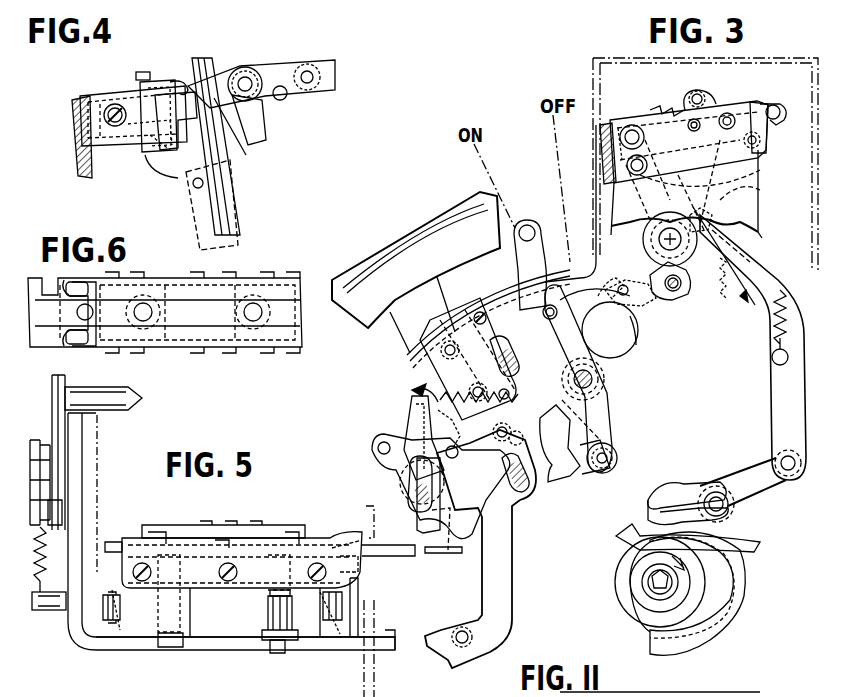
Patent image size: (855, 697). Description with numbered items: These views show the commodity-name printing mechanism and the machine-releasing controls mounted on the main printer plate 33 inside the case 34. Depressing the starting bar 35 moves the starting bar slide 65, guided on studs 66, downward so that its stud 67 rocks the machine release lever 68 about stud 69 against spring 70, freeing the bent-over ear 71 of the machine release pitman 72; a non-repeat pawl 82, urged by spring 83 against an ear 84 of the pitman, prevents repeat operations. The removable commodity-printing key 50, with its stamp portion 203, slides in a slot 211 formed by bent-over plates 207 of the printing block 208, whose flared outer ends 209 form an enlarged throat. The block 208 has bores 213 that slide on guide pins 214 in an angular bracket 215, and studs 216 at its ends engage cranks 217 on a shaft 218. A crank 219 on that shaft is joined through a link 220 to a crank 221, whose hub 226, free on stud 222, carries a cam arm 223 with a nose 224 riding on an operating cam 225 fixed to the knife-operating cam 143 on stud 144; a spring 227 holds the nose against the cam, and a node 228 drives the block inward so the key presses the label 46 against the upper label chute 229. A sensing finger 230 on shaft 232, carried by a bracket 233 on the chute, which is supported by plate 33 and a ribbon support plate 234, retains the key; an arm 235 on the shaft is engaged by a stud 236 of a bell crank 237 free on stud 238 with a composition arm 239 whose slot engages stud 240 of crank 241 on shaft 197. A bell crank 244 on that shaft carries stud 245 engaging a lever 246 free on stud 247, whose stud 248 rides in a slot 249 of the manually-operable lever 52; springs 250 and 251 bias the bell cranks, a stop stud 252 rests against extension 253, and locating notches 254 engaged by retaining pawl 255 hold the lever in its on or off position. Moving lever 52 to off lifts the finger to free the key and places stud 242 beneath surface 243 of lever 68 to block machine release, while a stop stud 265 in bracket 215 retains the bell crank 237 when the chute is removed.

In FIG. 5, the main printer plate 33 is at (92, 452).
In FIG. 3, the main printer plate 33 is at (760, 212).
In FIG. 3, the case or cabinet 34 is at (614, 58).
In FIG. 3, the starting bar 35 is at (384, 250).
In FIG. 4, the label 46 is at (200, 54).
In FIG. 11, the label 46 is at (738, 696).
In FIG. 4, the commodity-printing key 50 is at (150, 130).
In FIG. 5, the commodity-printing key 50 is at (398, 558).
In FIG. 3, the manually-operable lever 52 is at (527, 222).
In FIG. 3, the starting bar slide 65 is at (470, 330).
In FIG. 3, the studs 66 is at (514, 358).
In FIG. 3, the stud 67 is at (508, 396).
In FIG. 3, the machine release lever 68 is at (552, 460).
In FIG. 3, the stud 69 is at (428, 496).
In FIG. 3, the spring 70 is at (472, 428).
In FIG. 3, the bent-over ear 71 is at (420, 392).
In FIG. 3, the machine release pitman 72 is at (498, 556).
In FIG. 3, the non-repeat pawl 82 is at (382, 456).
In FIG. 3, the spring 83 is at (408, 428).
In FIG. 3, the ear 84 is at (410, 482).
In FIG. 3, the knife-operating cam 143 is at (738, 580).
In FIG. 3, the stud 144 is at (646, 592).
In FIG. 3, the shaft 197 is at (658, 240).
In FIG. 4, the stamp portion 203 is at (178, 165).
In FIG. 5, the stamp portion 203 is at (258, 535).
In FIG. 4, the plates 207 is at (165, 80).
In FIG. 6, the plates 207 is at (220, 284).
In FIG. 5, the plates 207 is at (185, 570).
In FIG. 4, the printing block 208 is at (115, 94).
In FIG. 6, the printing block 208 is at (302, 322).
In FIG. 5, the printing block 208 is at (134, 630).
In FIG. 3, the printing block 208 is at (630, 122).
In FIG. 6, the flared outer ends 209 is at (78, 334).
In FIG. 5, the flared outer ends 209 is at (340, 540).
In FIG. 4, the slot 211 is at (182, 80).
In FIG. 6, the bores 213 is at (250, 313).
In FIG. 4, the guide pins 214 is at (140, 120).
In FIG. 5, the guide pins 214 is at (274, 610).
In FIG. 4, the angular bracket 215 is at (75, 157).
In FIG. 5, the angular bracket 215 is at (198, 645).
In FIG. 3, the angular bracket 215 is at (616, 166).
In FIG. 4, the studs 216 is at (104, 110).
In FIG. 5, the studs 216 is at (104, 605).
In FIG. 3, the studs 216 is at (624, 134).
In FIG. 5, the cranks 217 is at (114, 628).
In FIG. 3, the cranks 217 is at (620, 152).
In FIG. 3, the shaft 218 is at (628, 172).
In FIG. 3, the crank 219 is at (684, 212).
In FIG. 3, the link 220 is at (760, 303).
In FIG. 3, the crank 221 is at (760, 474).
In FIG. 3, the stud 222 is at (728, 516).
In FIG. 3, the cam arm 223 is at (686, 492).
In FIG. 3, the nose 224 is at (642, 514).
In FIG. 3, the operating cam 225 is at (610, 576).
In FIG. 3, the hub 226 is at (710, 494).
In FIG. 3, the spring 227 is at (772, 336).
In FIG. 3, the node 228 is at (620, 538).
In FIG. 4, the upper label chute 229 is at (234, 205).
In FIG. 4, the sensing finger 230 is at (175, 130).
In FIG. 5, the sensing finger 230 is at (362, 516).
In FIG. 4, the shaft 232 is at (270, 115).
In FIG. 4, the bracket 233 is at (236, 165).
In FIG. 5, the ribbon support plate 234 is at (375, 690).
In FIG. 4, the arm 235 is at (322, 84).
In FIG. 4, the stud 236 is at (318, 76).
In FIG. 3, the stud 236 is at (776, 106).
In FIG. 3, the bell crank 237 is at (762, 104).
In FIG. 3, the stud 238 is at (714, 98).
In FIG. 3, the composition arm 239 is at (760, 160).
In FIG. 3, the stud 240 is at (756, 190).
In FIG. 3, the crank 241 is at (740, 238).
In FIG. 3, the stud 242 is at (606, 446).
In FIG. 3, the surface 243 is at (588, 468).
In FIG. 3, the bell crank 244 is at (698, 250).
In FIG. 3, the stud 245 is at (646, 300).
In FIG. 3, the lever 246 is at (644, 314).
In FIG. 3, the stud 247 is at (600, 384).
In FIG. 3, the stud 248 is at (584, 340).
In FIG. 3, the slot 249 is at (592, 320).
In FIG. 3, the spring 250 is at (780, 290).
In FIG. 3, the spring 251 is at (668, 112).
In FIG. 4, the stop stud 252 is at (290, 100).
In FIG. 4, the extension 253 is at (260, 72).
In FIG. 3, the locating notches 254 is at (638, 340).
In FIG. 3, the retaining pawl 255 is at (656, 290).
In FIG. 3, the stop stud 265 is at (690, 127).